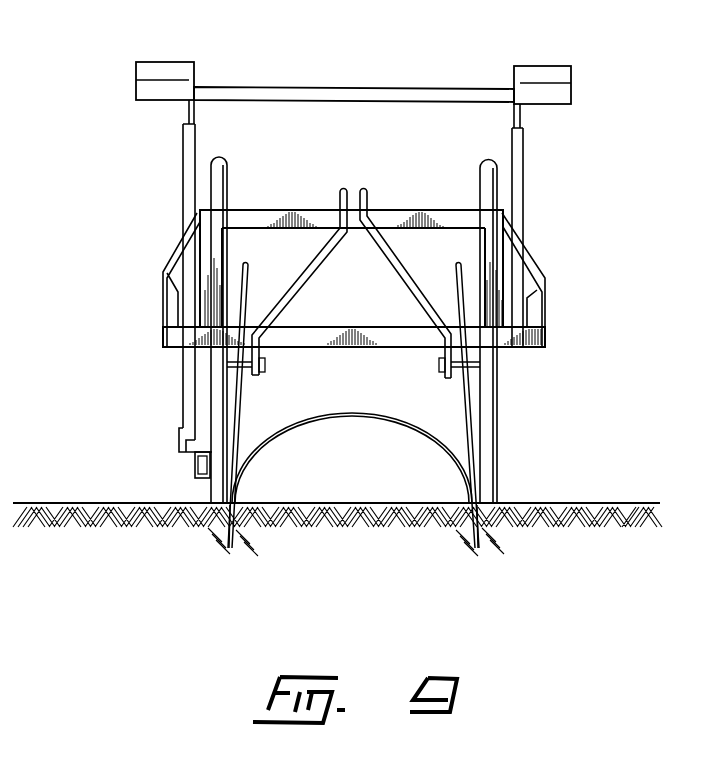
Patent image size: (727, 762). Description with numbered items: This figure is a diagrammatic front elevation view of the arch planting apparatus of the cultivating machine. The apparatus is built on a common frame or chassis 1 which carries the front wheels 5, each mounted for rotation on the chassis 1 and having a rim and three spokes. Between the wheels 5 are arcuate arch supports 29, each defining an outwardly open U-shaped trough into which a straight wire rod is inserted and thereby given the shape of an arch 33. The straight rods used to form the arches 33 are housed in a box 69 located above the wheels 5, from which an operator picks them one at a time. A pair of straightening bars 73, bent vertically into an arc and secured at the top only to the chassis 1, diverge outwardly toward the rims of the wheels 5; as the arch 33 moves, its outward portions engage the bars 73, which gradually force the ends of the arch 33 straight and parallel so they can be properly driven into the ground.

The box 69 is at (363, 85).
The frame or chassis 1 is at (517, 167).
The front wheels 5 is at (223, 486).
The straightening bars 73 is at (243, 408).
The arcuate arch support 29 is at (318, 415).
The arch 33 is at (235, 530).